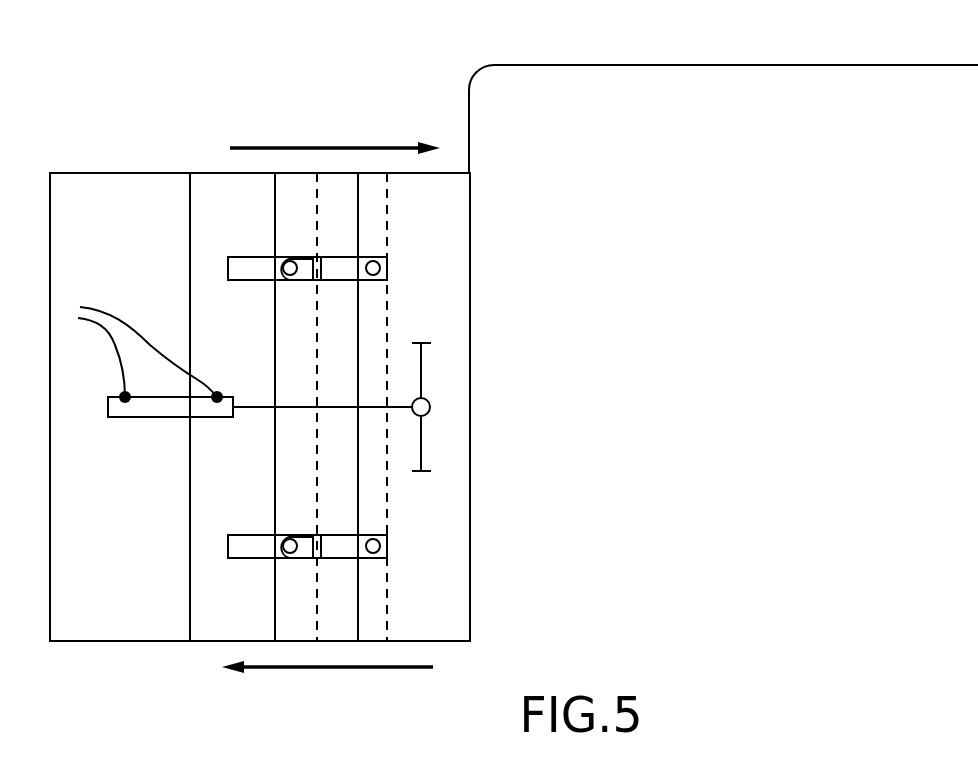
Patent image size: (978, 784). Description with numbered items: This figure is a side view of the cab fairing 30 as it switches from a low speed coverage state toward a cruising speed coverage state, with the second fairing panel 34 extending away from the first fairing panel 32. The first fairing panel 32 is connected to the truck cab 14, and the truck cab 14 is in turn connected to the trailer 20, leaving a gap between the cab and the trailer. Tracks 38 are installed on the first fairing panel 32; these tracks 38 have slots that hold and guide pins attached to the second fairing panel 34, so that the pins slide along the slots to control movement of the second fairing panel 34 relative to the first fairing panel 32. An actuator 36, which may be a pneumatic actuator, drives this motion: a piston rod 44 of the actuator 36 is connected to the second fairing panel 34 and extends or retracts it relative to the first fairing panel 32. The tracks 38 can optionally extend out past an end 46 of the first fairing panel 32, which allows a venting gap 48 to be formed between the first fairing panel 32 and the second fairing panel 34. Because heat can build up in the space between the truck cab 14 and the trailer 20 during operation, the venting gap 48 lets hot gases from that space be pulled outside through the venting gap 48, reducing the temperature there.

The truck cab 14 is at (98, 173).
The trailer 20 is at (672, 65).
The cab fairing 30 is at (265, 122).
The first fairing panel 32 is at (218, 173).
The second fairing panel 34 is at (396, 173).
The actuator 36 is at (138, 418).
The tracks 38 is at (245, 282).
The piston rod 44 is at (338, 409).
The end of the first fairing panel 46 is at (275, 222).
The venting gap 48 is at (325, 173).